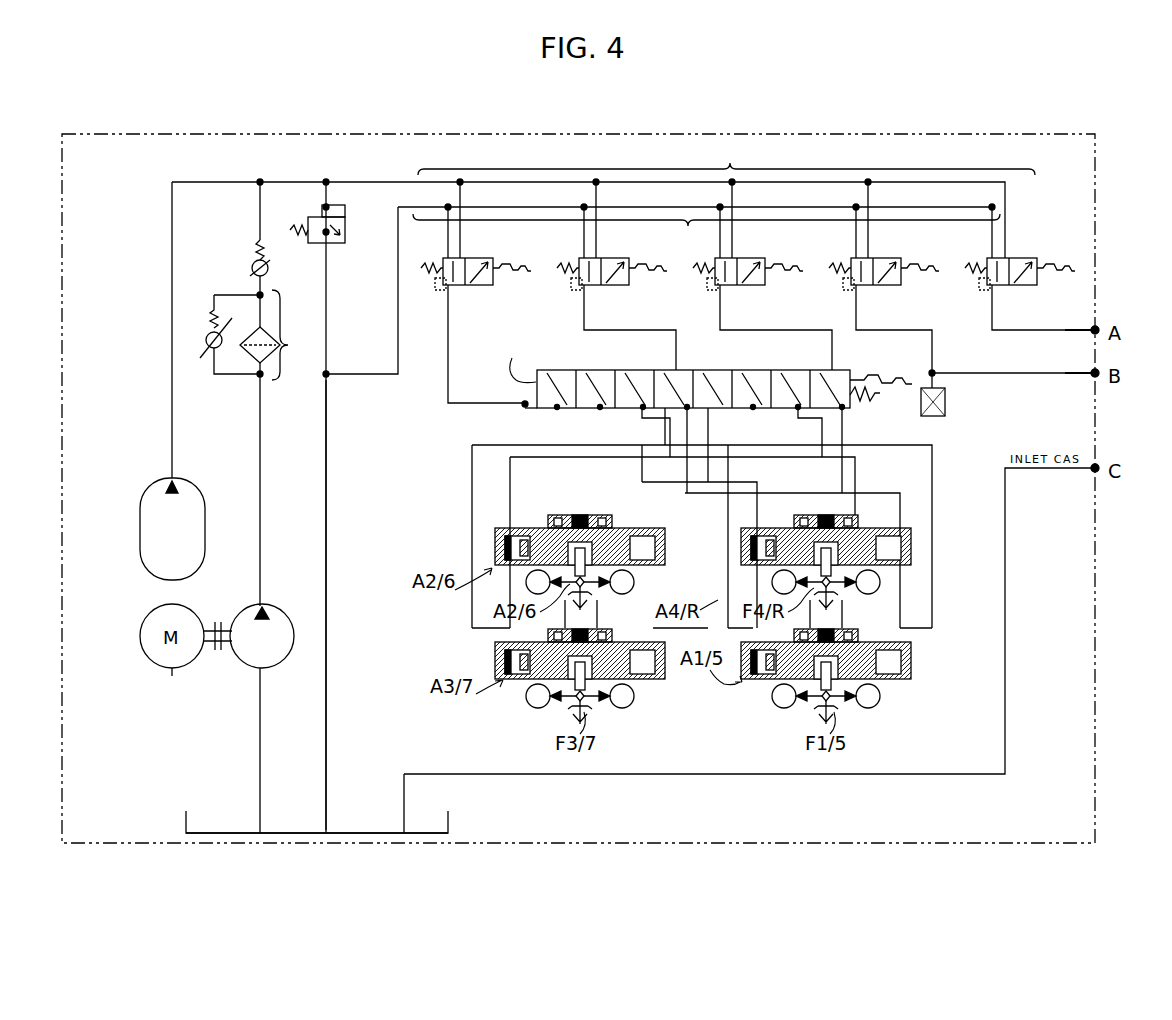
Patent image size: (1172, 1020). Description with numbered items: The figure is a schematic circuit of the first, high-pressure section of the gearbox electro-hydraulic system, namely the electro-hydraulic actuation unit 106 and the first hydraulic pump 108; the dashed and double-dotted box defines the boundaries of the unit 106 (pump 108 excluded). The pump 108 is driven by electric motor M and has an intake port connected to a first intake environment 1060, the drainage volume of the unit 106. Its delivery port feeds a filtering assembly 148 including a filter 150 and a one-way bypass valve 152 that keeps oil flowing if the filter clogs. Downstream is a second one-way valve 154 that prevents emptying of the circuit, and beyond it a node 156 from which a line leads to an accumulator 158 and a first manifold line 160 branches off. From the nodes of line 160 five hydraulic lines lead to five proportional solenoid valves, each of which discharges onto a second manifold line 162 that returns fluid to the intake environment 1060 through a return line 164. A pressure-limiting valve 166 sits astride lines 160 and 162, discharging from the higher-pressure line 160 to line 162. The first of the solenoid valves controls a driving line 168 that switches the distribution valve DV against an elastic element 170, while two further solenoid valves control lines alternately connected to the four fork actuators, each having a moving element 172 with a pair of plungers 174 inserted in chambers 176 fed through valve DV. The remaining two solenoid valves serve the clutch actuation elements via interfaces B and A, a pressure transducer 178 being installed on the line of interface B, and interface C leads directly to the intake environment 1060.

The electro-hydraulic actuation unit 106 is at (1096, 640).
The first hydraulic pump 108 is at (276, 614).
The filtering assembly 148 is at (270, 335).
The filter 150 is at (250, 370).
The bypass relief valve 152 is at (214, 356).
The second one-way valve 154 is at (256, 260).
The node 156 is at (258, 180).
The accumulator 158 is at (154, 516).
The first manifold line 160 is at (746, 272).
The second manifold line 162 is at (706, 234).
The return line 164 is at (328, 508).
The pressure-limiting valve 166 is at (335, 242).
The driving line 168 is at (464, 407).
The elastic element 170 is at (858, 402).
The moving element 172 is at (594, 542).
The plungers 174 is at (539, 524).
The chambers 176 is at (496, 542).
The pressure transducer 178 is at (944, 408).
The first intake environment 1060 is at (450, 828).